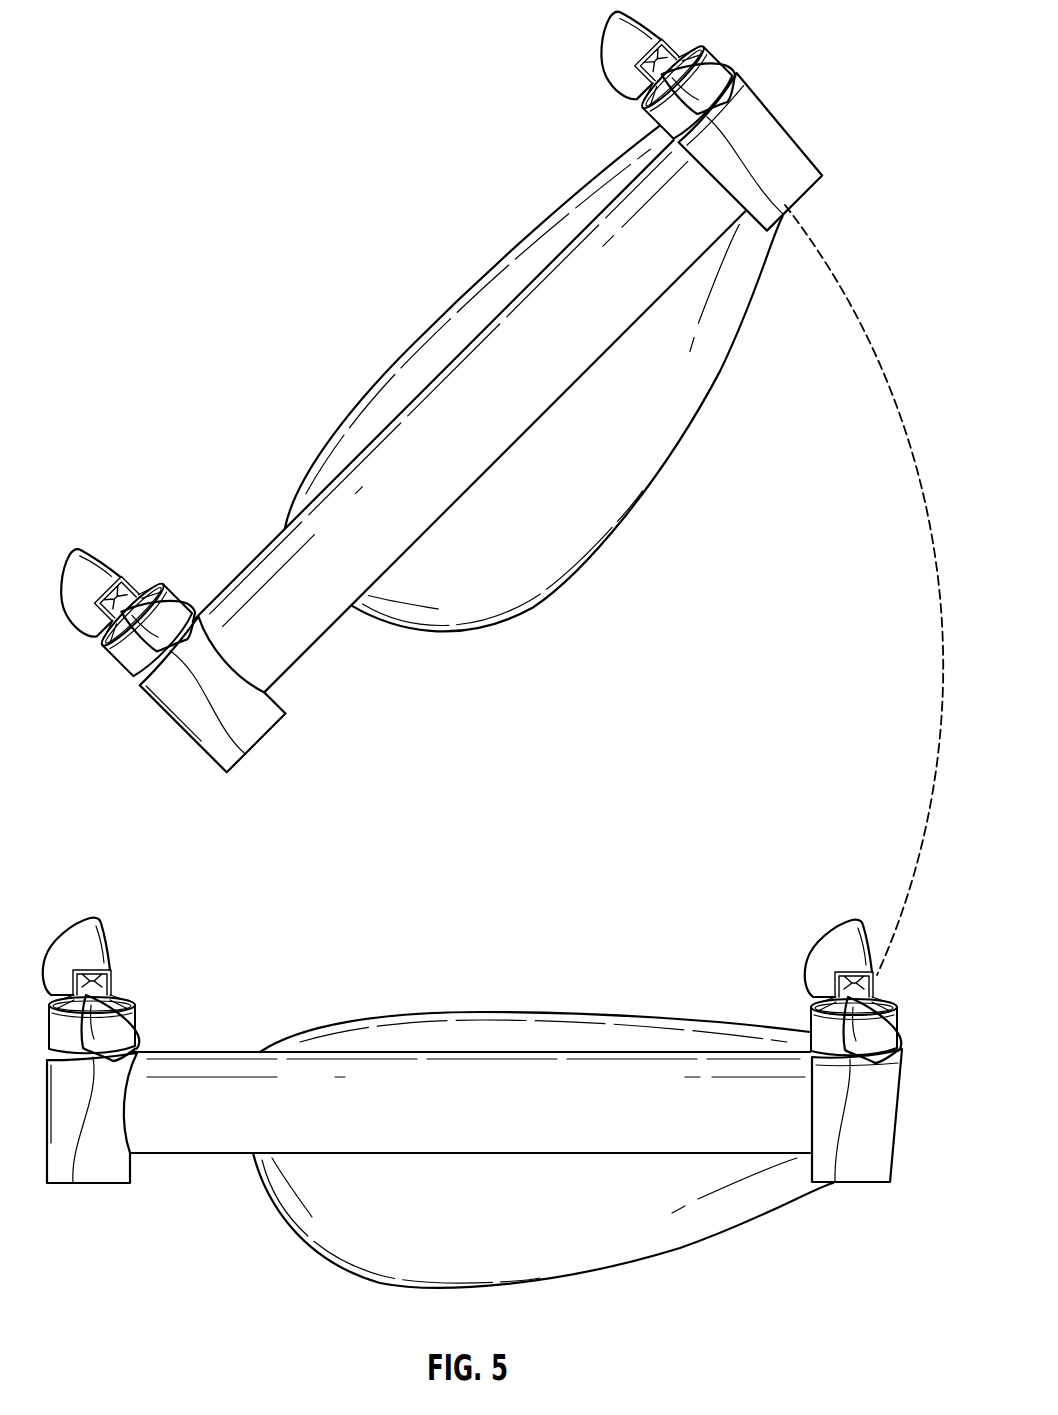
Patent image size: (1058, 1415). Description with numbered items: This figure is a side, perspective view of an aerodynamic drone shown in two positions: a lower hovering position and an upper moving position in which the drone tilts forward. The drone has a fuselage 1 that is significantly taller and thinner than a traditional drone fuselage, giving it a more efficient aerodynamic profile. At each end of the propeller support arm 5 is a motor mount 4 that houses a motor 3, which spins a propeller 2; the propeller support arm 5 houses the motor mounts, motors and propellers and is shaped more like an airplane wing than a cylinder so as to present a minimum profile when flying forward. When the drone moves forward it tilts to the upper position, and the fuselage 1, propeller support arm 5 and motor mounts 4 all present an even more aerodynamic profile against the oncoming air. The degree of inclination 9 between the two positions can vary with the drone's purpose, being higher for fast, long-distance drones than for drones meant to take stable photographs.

The fuselage 1 is at (683, 1247).
The propeller 2 is at (845, 928).
The motor 3 is at (887, 997).
The motor mount 4 is at (900, 1037).
The propeller support arm 5 is at (733, 1140).
The degree of inclination 9 is at (943, 655).